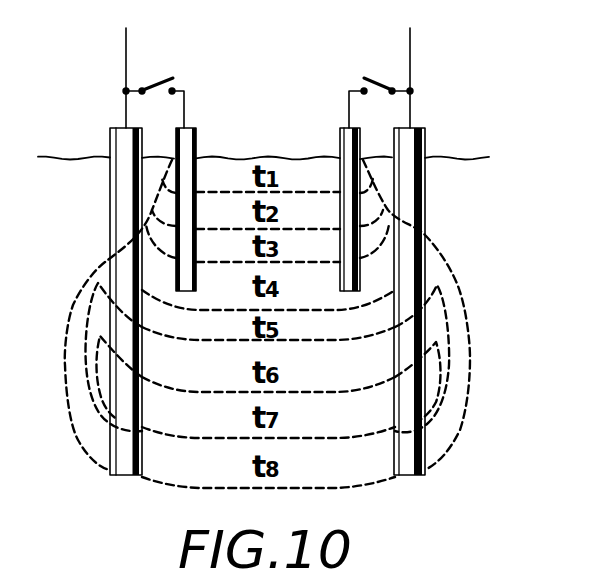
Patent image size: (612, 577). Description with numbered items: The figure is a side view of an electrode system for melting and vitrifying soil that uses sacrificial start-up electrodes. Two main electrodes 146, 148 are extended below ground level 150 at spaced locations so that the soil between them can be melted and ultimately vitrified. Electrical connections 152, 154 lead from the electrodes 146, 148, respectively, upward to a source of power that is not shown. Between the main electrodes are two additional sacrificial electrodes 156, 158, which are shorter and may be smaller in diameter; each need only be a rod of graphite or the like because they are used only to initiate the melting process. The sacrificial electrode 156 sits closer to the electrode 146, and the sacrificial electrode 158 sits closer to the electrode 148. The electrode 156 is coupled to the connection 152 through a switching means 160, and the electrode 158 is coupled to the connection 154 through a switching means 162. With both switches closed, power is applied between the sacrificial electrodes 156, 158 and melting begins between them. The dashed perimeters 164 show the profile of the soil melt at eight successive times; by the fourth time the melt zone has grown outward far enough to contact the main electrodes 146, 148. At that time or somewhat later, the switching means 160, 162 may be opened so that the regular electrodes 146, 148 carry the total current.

The electrode 146 is at (110, 200).
The electrode 148 is at (425, 203).
The ground level 150 is at (458, 158).
The electrical connection 152 is at (126, 61).
The electrical connection 154 is at (411, 62).
The sacrificial electrode 156 is at (196, 137).
The sacrificial electrode 158 is at (339, 148).
The switching means 160 is at (152, 82).
The switching means 162 is at (380, 80).
The perimeters 164 is at (470, 293).